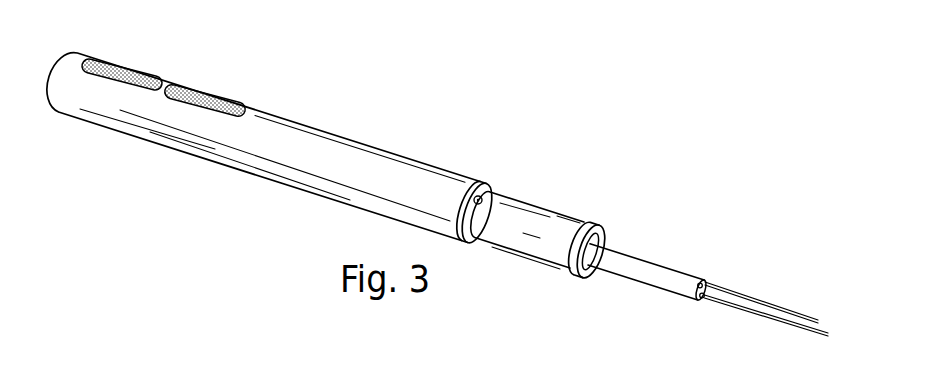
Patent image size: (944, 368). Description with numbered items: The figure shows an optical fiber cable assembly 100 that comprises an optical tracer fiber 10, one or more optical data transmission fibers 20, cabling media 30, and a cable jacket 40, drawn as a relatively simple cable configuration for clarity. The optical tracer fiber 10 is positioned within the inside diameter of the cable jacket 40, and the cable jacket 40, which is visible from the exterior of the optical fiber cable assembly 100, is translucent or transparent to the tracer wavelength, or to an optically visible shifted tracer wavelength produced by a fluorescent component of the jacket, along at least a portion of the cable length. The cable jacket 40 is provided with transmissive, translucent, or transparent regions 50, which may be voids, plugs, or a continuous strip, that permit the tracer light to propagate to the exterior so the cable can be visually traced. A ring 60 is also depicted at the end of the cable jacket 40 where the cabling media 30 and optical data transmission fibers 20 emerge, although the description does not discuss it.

The optical fiber cable assembly 100 is at (437, 179).
The cable jacket 40 is at (383, 150).
The transparent regions 50 is at (125, 68).
The ring 60 is at (471, 238).
The optical tracer fiber 10 is at (486, 200).
The cabling media 30 is at (578, 271).
The optical data transmission fibers 20 is at (700, 280).